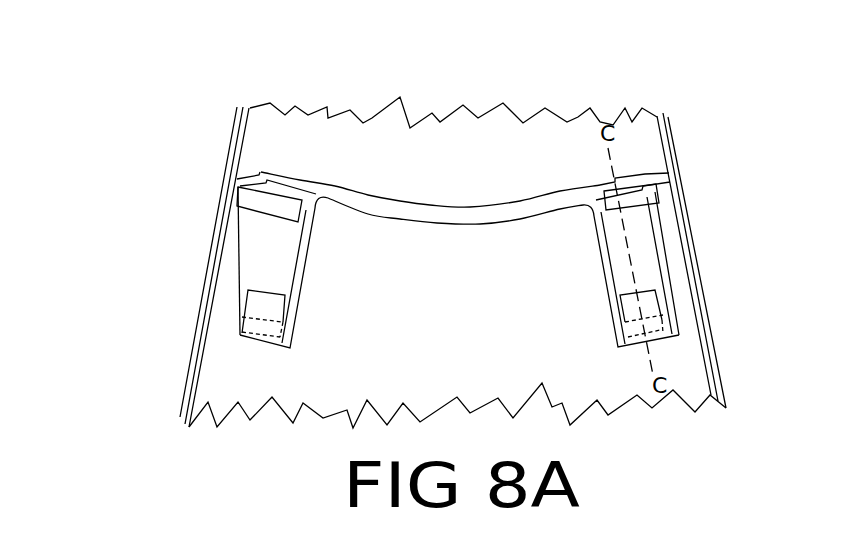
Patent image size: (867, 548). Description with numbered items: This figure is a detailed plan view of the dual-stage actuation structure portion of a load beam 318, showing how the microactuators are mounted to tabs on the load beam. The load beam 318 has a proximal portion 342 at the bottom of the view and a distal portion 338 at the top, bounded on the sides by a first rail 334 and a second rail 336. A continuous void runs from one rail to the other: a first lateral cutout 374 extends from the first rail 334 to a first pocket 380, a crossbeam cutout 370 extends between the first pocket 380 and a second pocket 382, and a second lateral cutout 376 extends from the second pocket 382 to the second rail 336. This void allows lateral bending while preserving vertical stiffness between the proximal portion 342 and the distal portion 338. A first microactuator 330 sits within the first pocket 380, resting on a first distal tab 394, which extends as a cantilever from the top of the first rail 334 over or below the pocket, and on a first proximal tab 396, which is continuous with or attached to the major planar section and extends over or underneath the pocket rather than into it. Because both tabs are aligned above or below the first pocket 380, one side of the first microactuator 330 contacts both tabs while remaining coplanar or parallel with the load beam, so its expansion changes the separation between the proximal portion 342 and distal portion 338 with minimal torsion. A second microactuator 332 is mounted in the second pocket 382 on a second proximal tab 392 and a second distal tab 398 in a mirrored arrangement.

The load beam 318 is at (580, 60).
The first microactuator 330 is at (640, 251).
The second microactuator 332 is at (257, 268).
The first rail 334 is at (663, 170).
The second rail 336 is at (234, 151).
The distal portion 338 is at (576, 118).
The proximal portion 342 is at (327, 395).
The crossbeam cutout 370 is at (368, 206).
The first lateral cutout 374 is at (628, 180).
The second lateral cutout 376 is at (289, 182).
The first pocket 380 is at (663, 215).
The second pocket 382 is at (238, 208).
The second proximal tab 392 is at (251, 311).
The first distal tab 394 is at (657, 195).
The first proximal tab 396 is at (652, 303).
The second distal tab 398 is at (243, 192).